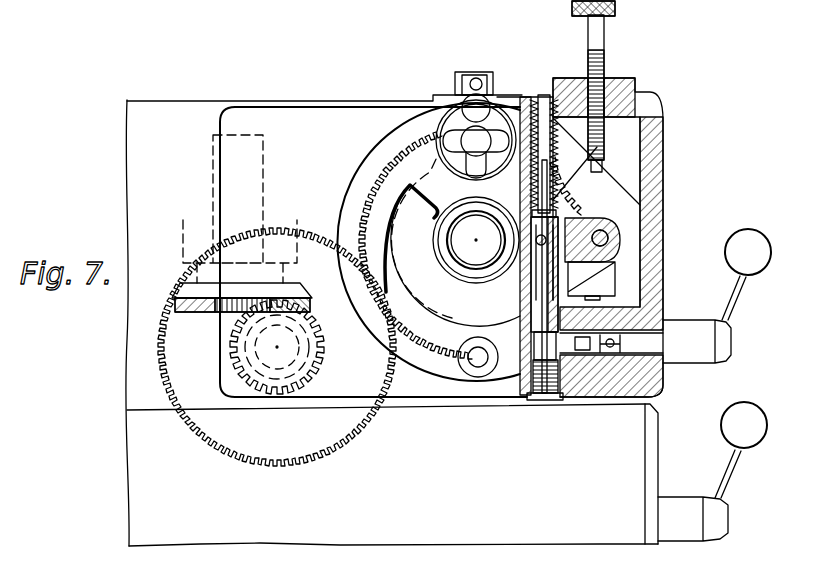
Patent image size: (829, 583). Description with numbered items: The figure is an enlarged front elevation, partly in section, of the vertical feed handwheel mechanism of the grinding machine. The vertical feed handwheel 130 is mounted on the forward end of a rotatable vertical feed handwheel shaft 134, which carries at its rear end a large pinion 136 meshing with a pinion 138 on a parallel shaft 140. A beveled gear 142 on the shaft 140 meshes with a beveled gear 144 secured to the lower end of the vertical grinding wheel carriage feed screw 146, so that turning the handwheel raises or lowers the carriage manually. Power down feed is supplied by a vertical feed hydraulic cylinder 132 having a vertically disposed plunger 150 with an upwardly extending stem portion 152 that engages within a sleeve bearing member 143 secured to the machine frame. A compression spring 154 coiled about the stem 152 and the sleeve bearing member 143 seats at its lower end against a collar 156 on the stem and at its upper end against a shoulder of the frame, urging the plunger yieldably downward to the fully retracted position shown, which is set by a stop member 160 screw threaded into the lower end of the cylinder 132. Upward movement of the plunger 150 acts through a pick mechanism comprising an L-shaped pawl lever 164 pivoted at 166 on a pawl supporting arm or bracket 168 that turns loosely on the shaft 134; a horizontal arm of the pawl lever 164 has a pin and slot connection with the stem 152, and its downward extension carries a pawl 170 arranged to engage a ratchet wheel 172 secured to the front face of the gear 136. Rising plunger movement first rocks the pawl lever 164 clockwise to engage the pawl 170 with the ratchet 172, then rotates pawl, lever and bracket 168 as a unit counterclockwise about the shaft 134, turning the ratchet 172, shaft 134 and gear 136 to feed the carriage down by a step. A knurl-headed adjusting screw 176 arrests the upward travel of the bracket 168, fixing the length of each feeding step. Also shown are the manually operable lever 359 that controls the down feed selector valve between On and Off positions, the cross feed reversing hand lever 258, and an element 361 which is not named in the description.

The vertical feed handwheel 130 is at (386, 160).
The vertical feed hydraulic cylinder 132 is at (513, 373).
The vertical feed handwheel shaft 134 is at (450, 240).
The large pinion 136 is at (432, 347).
The pinion 138 is at (315, 466).
The parallel shaft 140 is at (318, 340).
The beveled gear 142 is at (243, 398).
The sleeve bearing member 143 is at (526, 105).
The beveled gear 144 is at (195, 313).
The vertical grinding wheel carriage feed screw 146 is at (212, 155).
The plunger 150 is at (540, 318).
The stem portion 152 is at (541, 96).
The compression spring 154 is at (566, 115).
The collar 156 is at (531, 211).
The stop member 160 is at (548, 383).
The pawl lever 164 is at (607, 276).
The pivot 166 is at (611, 239).
The pawl supporting arm or bracket 168 is at (565, 218).
The pawl 170 is at (608, 290).
The ratchet wheel 172 is at (607, 160).
The knurl-headed adjusting screw 176 is at (583, 23).
The cross feed reversing hand lever 258 is at (728, 468).
The manually operable lever 359 is at (740, 286).
The lever shaft 361 is at (648, 351).